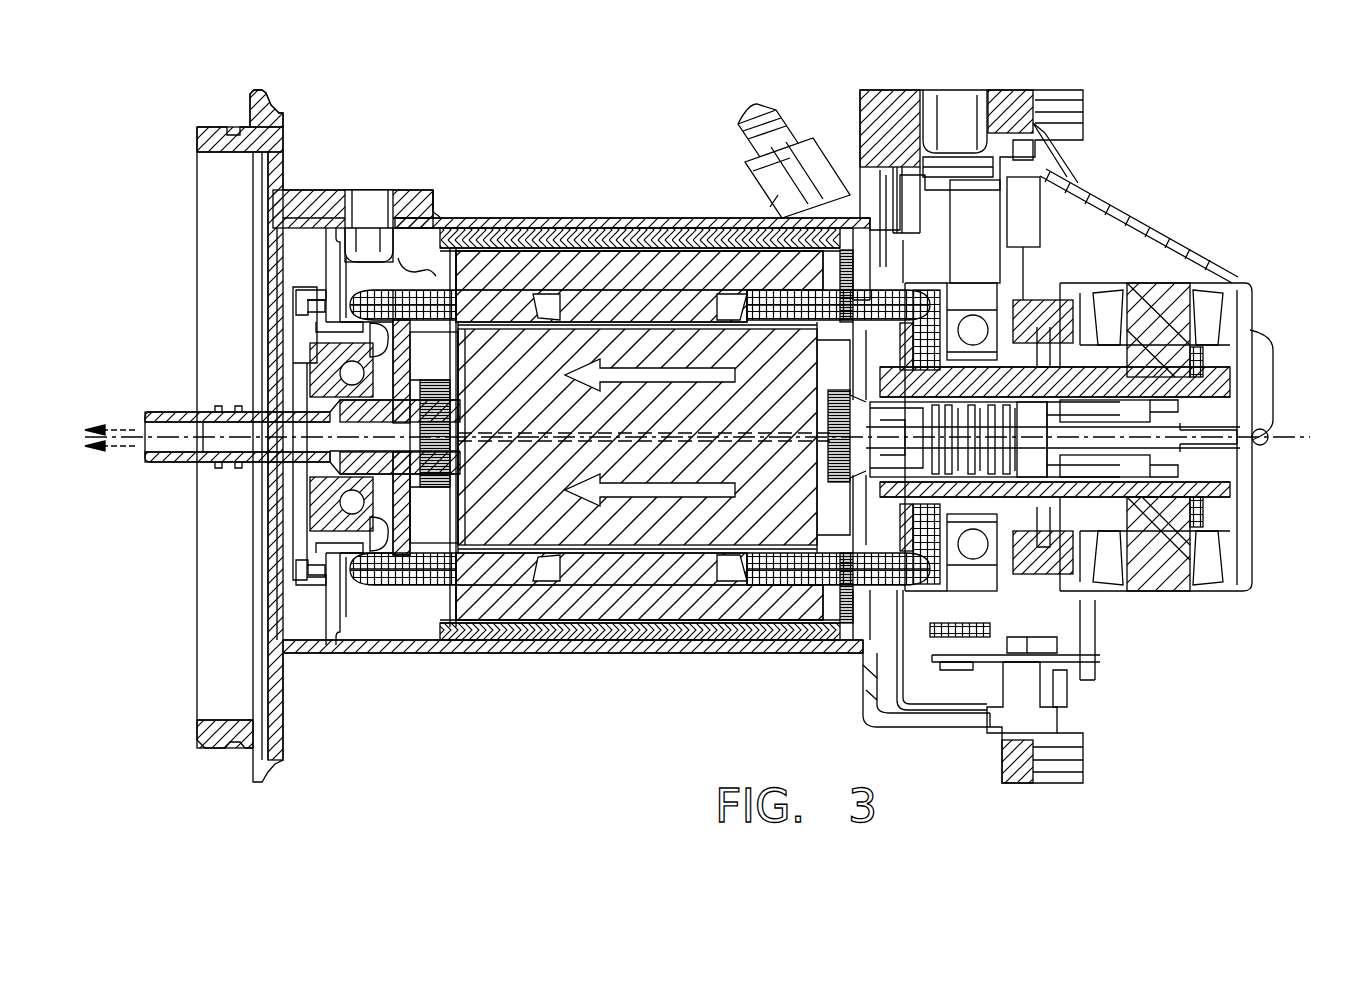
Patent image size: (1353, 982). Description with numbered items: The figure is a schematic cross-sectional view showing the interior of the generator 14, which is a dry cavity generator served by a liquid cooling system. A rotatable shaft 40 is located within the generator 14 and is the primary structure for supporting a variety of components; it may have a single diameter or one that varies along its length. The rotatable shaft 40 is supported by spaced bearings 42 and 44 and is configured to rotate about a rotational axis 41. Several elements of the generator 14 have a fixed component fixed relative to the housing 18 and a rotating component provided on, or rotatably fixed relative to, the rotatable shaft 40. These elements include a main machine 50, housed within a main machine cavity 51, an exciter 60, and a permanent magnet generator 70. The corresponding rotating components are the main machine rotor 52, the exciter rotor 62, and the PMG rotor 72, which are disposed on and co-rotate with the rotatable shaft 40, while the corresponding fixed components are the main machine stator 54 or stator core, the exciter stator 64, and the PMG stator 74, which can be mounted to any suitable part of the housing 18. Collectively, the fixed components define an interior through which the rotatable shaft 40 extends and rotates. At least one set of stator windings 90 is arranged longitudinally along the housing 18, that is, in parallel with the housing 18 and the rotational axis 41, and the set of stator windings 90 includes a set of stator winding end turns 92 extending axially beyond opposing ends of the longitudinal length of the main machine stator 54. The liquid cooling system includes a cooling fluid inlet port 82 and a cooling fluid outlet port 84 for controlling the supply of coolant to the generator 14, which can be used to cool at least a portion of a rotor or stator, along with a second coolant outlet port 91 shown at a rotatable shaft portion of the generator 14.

The generator 14 is at (474, 98).
The housing 18 is at (488, 218).
The rotatable shaft 40 is at (226, 482).
The rotational axis 41 is at (1270, 443).
The bearing 42 is at (340, 505).
The bearing 44 is at (948, 662).
The main machine 50 is at (570, 165).
The main machine cavity 51 is at (438, 270).
The main machine rotor 52 is at (500, 525).
The main machine stator 54 is at (577, 606).
The exciter 60 is at (1165, 270).
The exciter rotor 62 is at (1170, 525).
The exciter stator 64 is at (1170, 577).
The permanent magnet generator 70 is at (1074, 276).
The PMG rotor 72 is at (1048, 548).
The PMG stator 74 is at (1100, 657).
The cooling fluid inlet port 82 is at (372, 205).
The cooling fluid outlet port 84 is at (745, 124).
The stator windings 90 is at (735, 300).
The second coolant outlet port 91 is at (140, 412).
The stator winding end turns 92 is at (856, 272).